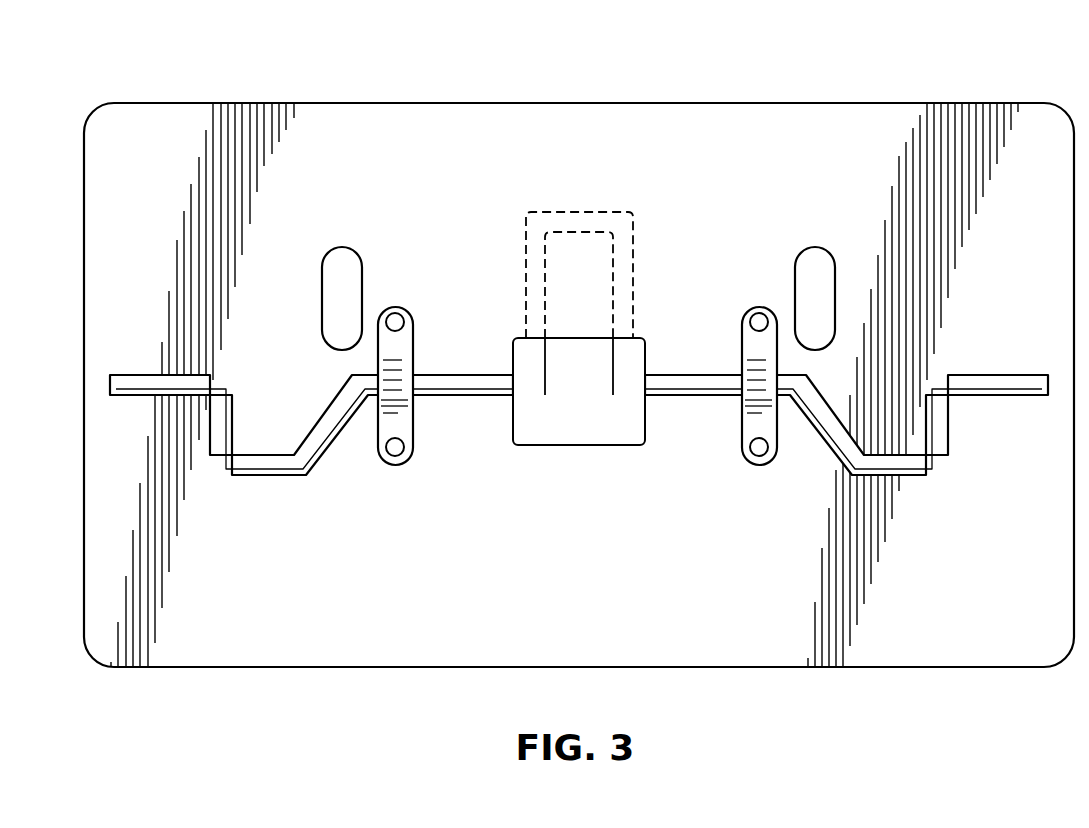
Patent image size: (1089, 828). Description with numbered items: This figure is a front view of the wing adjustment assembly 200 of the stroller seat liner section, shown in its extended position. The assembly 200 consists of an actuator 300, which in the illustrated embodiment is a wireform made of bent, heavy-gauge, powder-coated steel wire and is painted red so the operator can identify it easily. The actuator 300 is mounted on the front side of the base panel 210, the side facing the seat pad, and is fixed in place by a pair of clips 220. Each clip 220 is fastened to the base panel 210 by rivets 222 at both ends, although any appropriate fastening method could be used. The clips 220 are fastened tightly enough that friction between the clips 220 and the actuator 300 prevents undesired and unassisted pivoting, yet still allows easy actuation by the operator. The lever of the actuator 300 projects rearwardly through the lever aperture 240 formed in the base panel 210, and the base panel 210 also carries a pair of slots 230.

The wing adjustment assembly 200 is at (579, 342).
The base panel 210 is at (590, 588).
The clips 220 is at (410, 345).
The rivets 222 is at (396, 318).
The slot 230 is at (341, 263).
The lever aperture 240 is at (597, 422).
The actuator 300 is at (579, 396).